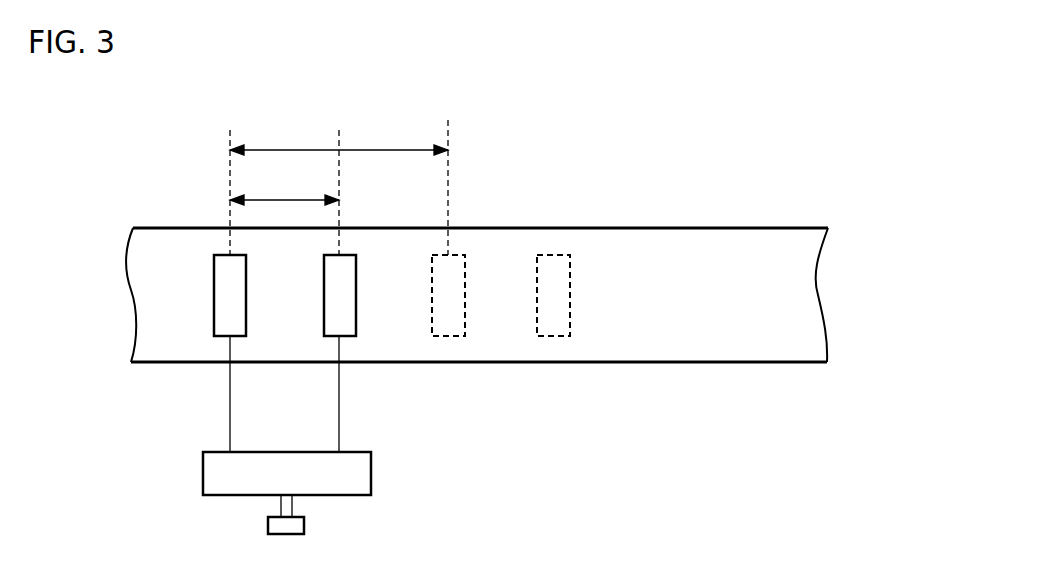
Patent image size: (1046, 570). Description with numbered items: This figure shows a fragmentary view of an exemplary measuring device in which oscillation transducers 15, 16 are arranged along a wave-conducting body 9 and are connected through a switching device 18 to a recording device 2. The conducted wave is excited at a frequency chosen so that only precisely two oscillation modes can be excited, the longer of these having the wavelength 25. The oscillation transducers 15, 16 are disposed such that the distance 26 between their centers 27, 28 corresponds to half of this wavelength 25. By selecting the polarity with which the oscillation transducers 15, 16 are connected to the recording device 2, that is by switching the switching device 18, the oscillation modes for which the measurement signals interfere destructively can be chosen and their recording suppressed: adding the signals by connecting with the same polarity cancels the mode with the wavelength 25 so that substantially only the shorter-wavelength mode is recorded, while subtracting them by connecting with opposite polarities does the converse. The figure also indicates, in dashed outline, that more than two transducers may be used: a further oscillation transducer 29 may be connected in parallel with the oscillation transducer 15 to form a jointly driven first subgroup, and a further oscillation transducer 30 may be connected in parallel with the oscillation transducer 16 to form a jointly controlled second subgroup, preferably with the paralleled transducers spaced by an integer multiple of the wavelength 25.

The recording device 2 is at (268, 523).
The conveyor belt 9 is at (662, 233).
The oscillation transducer 15 is at (217, 255).
The oscillation transducer 16 is at (324, 293).
The switching device 18 is at (203, 472).
The wavelength 25 is at (392, 149).
The distance 26 is at (291, 200).
The center 27 is at (230, 141).
The center 28 is at (339, 136).
The further oscillation transducer 29 is at (453, 337).
The further oscillation transducer 30 is at (552, 337).